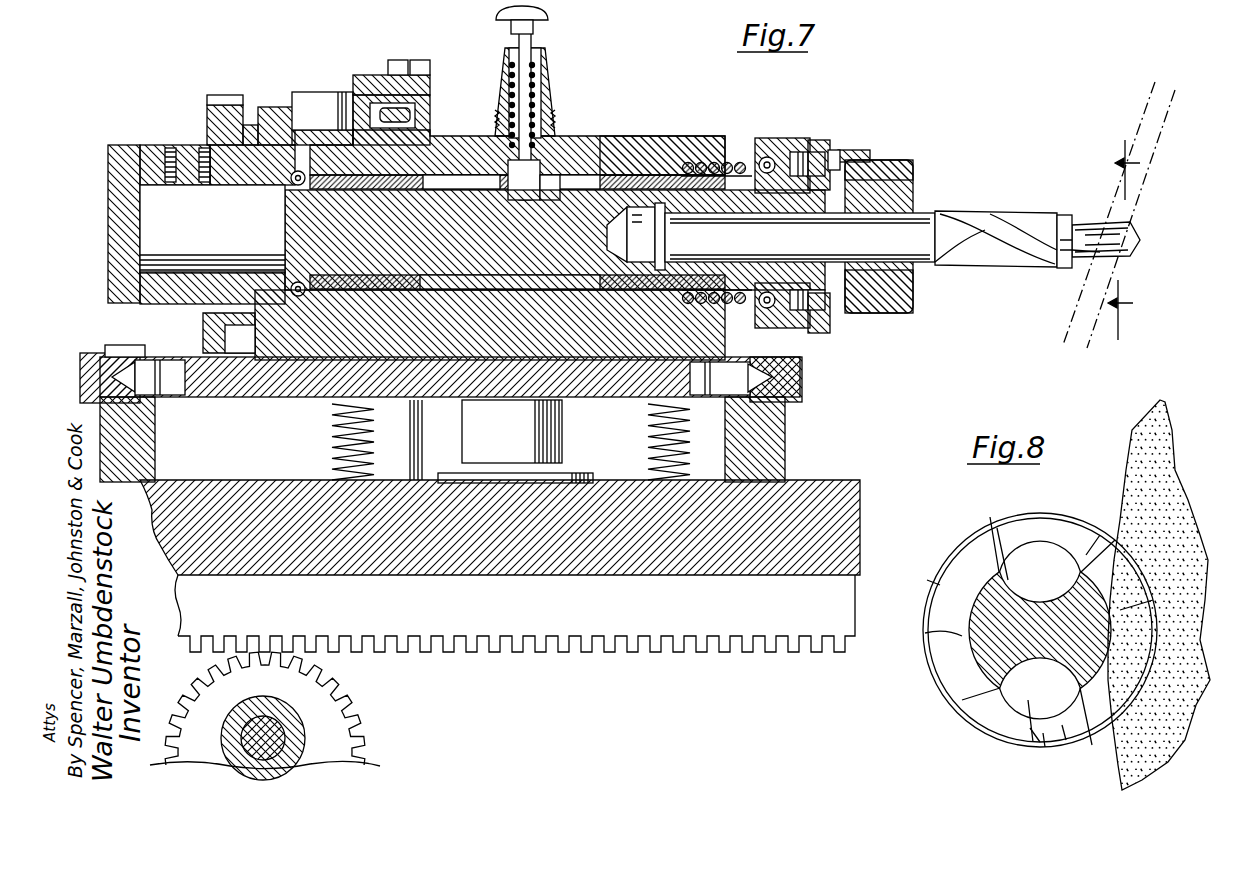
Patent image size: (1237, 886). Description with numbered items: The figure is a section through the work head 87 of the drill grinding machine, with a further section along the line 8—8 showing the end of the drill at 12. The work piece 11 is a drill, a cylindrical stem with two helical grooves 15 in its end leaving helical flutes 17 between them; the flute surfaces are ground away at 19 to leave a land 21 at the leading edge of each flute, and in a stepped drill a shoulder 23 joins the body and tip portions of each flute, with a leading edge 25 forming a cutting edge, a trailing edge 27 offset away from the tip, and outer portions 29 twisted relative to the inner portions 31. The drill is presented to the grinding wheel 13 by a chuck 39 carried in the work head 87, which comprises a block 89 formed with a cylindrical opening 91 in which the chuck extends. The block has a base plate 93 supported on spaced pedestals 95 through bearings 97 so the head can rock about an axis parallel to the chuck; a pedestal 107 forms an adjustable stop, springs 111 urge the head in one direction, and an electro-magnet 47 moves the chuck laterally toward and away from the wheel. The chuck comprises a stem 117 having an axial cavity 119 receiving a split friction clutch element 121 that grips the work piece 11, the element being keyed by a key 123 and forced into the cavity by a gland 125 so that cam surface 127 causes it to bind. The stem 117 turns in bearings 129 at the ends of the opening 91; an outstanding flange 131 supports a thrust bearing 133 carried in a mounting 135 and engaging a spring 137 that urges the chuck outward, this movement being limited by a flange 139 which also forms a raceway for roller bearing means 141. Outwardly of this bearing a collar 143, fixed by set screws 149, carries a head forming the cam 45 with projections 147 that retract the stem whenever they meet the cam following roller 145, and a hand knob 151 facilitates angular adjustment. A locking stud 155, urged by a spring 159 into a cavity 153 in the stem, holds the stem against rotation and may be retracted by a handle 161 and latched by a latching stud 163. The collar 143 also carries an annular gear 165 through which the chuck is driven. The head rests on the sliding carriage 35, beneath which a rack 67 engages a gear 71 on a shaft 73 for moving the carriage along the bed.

In FIG. 7, the section line 8— 8 is at (1130, 240).
In FIG. 7, the work piece 11 is at (800, 237).
In FIG. 8, the drill 12 is at (1023, 687).
In FIG. 7, the grinding wheel 13 is at (1128, 152).
In FIG. 8, the grinding wheel 13 is at (1145, 460).
In FIG. 7, the helical grooves 15 is at (1005, 248).
In FIG. 8, the helical grooves 15 is at (1008, 698).
In FIG. 8, the helical flutes 17 is at (1096, 748).
In FIG. 7, the undercut portions 19 is at (1092, 256).
In FIG. 8, the undercut portions 19 is at (1157, 695).
In FIG. 7, the land 21 is at (1118, 258).
In FIG. 8, the land 21 is at (1128, 268).
In FIG. 7, the shoulder 23 is at (1085, 233).
In FIG. 8, the shoulder 23 is at (1043, 733).
In FIG. 7, the leading edge 25 is at (1078, 262).
In FIG. 8, the leading edge 25 is at (937, 645).
In FIG. 7, the trailing edge 27 is at (1048, 265).
In FIG. 8, the trailing edge 27 is at (1030, 728).
In FIG. 7, the outer portions 29 is at (1060, 215).
In FIG. 8, the outer portions 29 is at (1033, 740).
In FIG. 7, the inner portions 31 is at (1100, 240).
In FIG. 8, the inner portions 31 is at (1065, 725).
In FIG. 7, the sliding frame 35 is at (860, 530).
In FIG. 7, the chuck 39 is at (870, 158).
In FIG. 7, the cam 45 is at (278, 340).
In FIG. 7, the electro-magnet 47 is at (515, 441).
In FIG. 7, the rack 67 is at (515, 613).
In FIG. 7, the gear 71 is at (332, 693).
In FIG. 7, the shaft 73 is at (290, 738).
In FIG. 7, the work head 87 is at (600, 128).
In FIG. 7, the block 89 is at (667, 143).
In FIG. 7, the cylindrical opening 91 is at (468, 176).
In FIG. 7, the base plate 93 is at (300, 398).
In FIG. 7, the pedestals 95 is at (785, 435).
In FIG. 7, the bearings 97 is at (740, 380).
In FIG. 7, the pedestal 107 is at (422, 440).
In FIG. 7, the springs 111 is at (648, 453).
In FIG. 7, the stem 117 is at (212, 229).
In FIG. 7, the axial cavity 119 is at (648, 225).
In FIG. 7, the split friction clutch element 121 is at (900, 175).
In FIG. 7, the key 123 is at (705, 175).
In FIG. 7, the gland 125 is at (855, 150).
In FIG. 7, the cam surface 127 is at (863, 310).
In FIG. 7, the bearings 129 is at (610, 178).
In FIG. 7, the outstanding flange 131 is at (817, 140).
In FIG. 7, the thrust bearing 133 is at (768, 157).
In FIG. 7, the mounting 135 is at (792, 165).
In FIG. 7, the spring 137 is at (727, 165).
In FIG. 7, the flange 139 is at (287, 145).
In FIG. 7, the roller bearing means 141 is at (305, 95).
In FIG. 7, the collar 143 is at (250, 125).
In FIG. 7, the cam following roller 145 is at (332, 110).
In FIG. 7, the projections 147 is at (335, 303).
In FIG. 7, the set screws 149 is at (180, 145).
In FIG. 7, the hand knob 151 is at (122, 145).
In FIG. 7, the slot or cavity 153 is at (548, 193).
In FIG. 7, the locking stud 155 is at (535, 200).
In FIG. 7, the spring 159 is at (548, 82).
In FIG. 7, the handle 161 is at (498, 17).
In FIG. 7, the latching stud 163 is at (535, 45).
In FIG. 7, the annular gear 165 is at (223, 95).